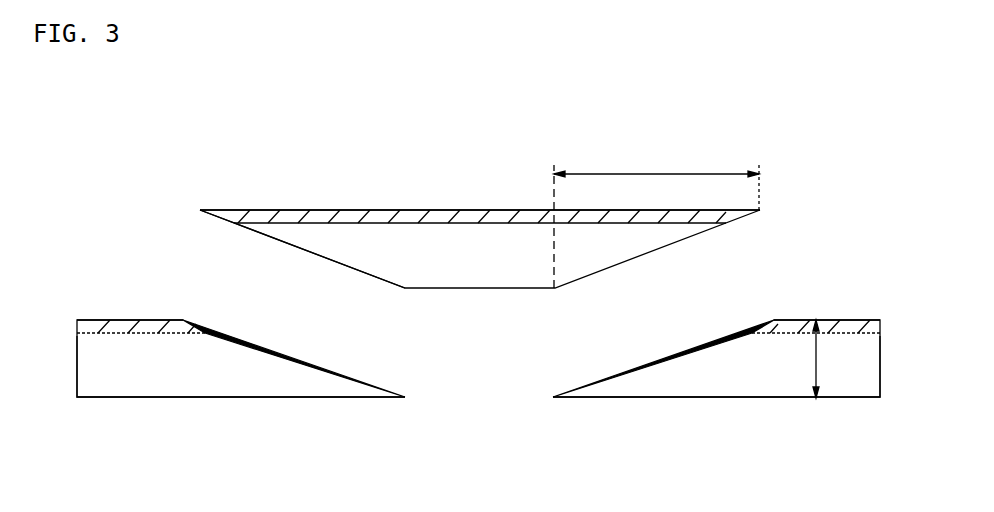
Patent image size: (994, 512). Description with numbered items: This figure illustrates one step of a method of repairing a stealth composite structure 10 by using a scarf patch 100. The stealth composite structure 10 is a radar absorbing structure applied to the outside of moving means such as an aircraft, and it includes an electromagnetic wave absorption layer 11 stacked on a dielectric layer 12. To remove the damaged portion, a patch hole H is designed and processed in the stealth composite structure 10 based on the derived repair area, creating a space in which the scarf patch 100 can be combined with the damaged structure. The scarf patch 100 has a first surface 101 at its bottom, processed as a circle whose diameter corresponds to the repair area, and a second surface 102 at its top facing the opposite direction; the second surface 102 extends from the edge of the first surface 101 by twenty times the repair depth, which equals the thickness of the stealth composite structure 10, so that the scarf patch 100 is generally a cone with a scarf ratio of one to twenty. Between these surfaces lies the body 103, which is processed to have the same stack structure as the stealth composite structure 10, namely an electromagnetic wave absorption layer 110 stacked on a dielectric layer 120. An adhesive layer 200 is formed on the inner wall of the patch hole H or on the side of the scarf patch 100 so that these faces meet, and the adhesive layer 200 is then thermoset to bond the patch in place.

The scarf patch 100 is at (411, 223).
The first surface 101 is at (521, 289).
The second surface 102 is at (358, 209).
The body 103 is at (411, 230).
The electromagnetic wave absorption layer 110 is at (237, 210).
The dielectric layer 120 is at (313, 251).
The stealth composite structure 10 is at (475, 365).
The electromagnetic wave absorption layer 11 is at (88, 321).
The dielectric layer 12 is at (167, 387).
The adhesive layer 200 is at (316, 362).
The patch hole H is at (482, 362).